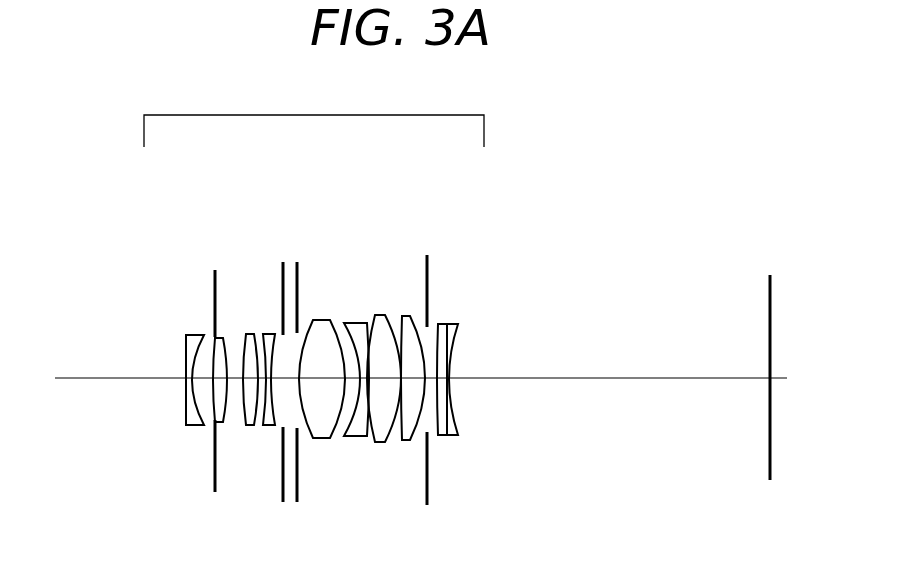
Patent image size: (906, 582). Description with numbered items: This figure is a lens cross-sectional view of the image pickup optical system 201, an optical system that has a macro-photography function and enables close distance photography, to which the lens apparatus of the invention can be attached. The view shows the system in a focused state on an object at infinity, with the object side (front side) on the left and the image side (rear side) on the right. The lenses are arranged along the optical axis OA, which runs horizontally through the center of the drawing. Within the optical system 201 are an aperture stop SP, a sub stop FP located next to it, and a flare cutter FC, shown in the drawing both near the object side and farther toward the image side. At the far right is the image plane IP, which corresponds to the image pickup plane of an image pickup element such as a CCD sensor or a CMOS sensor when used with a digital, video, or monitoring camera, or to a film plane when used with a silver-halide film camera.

The image pickup optical system 201 is at (314, 263).
The flare cutter FC is at (211, 274).
The sub stop FP is at (279, 266).
The aperture stop SP is at (304, 261).
The image plane IP is at (766, 283).
The optical axis OA is at (78, 374).